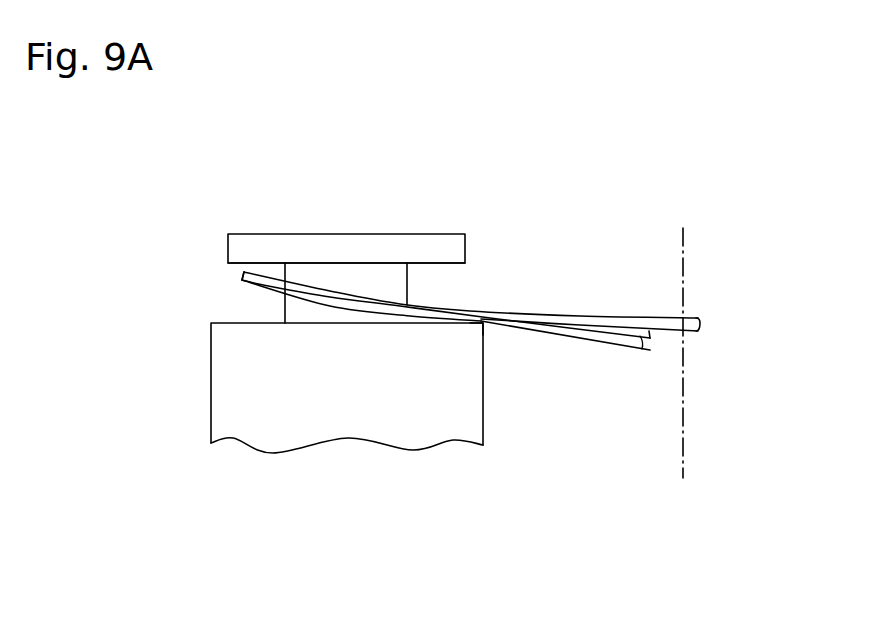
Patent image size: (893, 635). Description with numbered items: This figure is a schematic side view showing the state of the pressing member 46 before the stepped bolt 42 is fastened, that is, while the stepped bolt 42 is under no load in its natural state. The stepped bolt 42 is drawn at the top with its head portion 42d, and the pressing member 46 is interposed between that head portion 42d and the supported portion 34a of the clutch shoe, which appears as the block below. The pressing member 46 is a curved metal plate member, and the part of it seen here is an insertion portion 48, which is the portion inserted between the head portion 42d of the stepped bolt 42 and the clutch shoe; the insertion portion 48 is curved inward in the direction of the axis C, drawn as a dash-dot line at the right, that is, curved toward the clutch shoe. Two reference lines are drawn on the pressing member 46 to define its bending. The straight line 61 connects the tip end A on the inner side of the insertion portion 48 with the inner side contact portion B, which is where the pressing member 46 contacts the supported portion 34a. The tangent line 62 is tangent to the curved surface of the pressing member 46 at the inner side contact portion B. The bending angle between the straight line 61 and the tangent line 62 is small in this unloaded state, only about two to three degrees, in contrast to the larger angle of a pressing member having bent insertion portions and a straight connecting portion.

The stepped bolt 42 is at (453, 231).
The head portion 42d is at (256, 243).
The insertion portion 48 is at (300, 284).
The pressing member 46 is at (627, 322).
The tangent line 62 is at (643, 338).
The straight line 61 is at (586, 341).
The supported portion 34a is at (237, 400).
The tip end A is at (243, 275).
The inner side contact portion B is at (480, 323).
The axis C is at (683, 437).